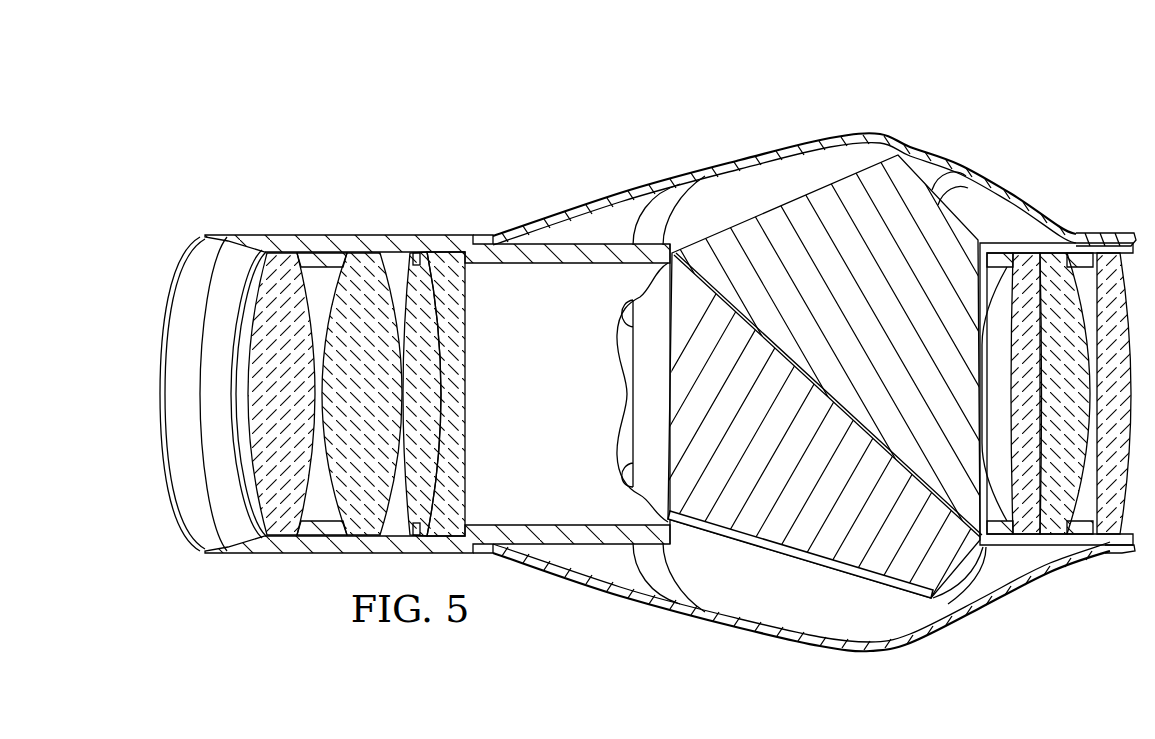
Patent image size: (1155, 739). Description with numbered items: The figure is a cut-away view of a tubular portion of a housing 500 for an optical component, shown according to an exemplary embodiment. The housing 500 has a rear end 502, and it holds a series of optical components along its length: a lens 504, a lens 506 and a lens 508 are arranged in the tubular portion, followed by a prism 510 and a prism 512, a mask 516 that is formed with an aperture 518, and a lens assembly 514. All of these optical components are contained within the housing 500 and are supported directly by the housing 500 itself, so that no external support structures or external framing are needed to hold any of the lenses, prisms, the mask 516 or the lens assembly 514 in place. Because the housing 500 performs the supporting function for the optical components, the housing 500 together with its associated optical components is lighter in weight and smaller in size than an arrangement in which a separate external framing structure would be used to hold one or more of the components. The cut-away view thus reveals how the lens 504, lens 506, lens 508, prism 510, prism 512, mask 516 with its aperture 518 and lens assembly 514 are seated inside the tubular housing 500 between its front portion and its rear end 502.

The housing 500 is at (462, 104).
The rear end 502 is at (220, 236).
The lens 504 is at (285, 256).
The lens 506 is at (367, 257).
The lens 508 is at (407, 259).
The prism 510 is at (847, 176).
The prism 512 is at (747, 536).
The lens assembly 514 is at (1056, 256).
The mask 516 is at (700, 262).
The aperture 518 is at (933, 563).